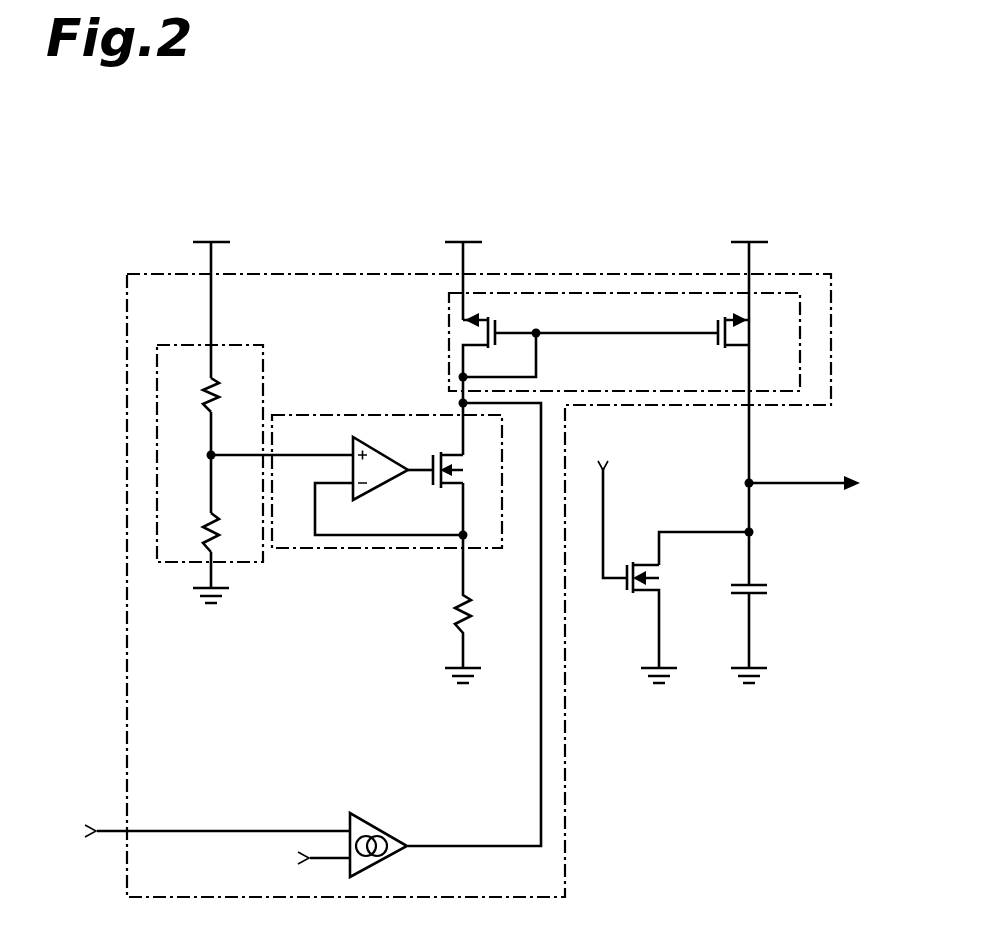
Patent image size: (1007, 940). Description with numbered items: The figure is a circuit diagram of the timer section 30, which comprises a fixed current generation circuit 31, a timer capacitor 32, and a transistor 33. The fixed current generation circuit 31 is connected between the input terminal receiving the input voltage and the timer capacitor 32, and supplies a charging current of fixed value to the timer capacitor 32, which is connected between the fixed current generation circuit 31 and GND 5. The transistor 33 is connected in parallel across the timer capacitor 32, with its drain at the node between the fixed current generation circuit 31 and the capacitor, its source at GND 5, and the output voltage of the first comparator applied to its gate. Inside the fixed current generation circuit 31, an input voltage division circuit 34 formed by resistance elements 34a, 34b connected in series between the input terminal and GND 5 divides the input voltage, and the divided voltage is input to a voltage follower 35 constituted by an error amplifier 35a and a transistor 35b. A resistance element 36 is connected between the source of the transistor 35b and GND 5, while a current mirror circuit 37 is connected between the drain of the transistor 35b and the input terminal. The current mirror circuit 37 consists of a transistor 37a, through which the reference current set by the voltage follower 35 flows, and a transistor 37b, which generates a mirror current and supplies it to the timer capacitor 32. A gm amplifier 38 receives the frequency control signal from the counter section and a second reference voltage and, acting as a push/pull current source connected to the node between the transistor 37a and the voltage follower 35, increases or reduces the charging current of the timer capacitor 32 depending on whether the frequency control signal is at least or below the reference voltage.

The timer section 30 is at (718, 106).
The fixed current generation circuit 31 is at (831, 334).
The timer capacitor 32 is at (755, 584).
The transistor 33 is at (615, 573).
The input voltage division circuit 34 is at (213, 434).
The resistance element 34a is at (222, 381).
The resistance element 34b is at (237, 515).
The voltage follower 35 is at (387, 446).
The error amplifier 35a is at (372, 447).
The transistor 35b is at (433, 477).
The resistance element 36 is at (463, 601).
The current mirror circuit 37 is at (583, 368).
The transistor 37a is at (494, 331).
The transistor 37b is at (718, 340).
The gm amplifier 38 is at (373, 823).
The GND 5 is at (219, 582).